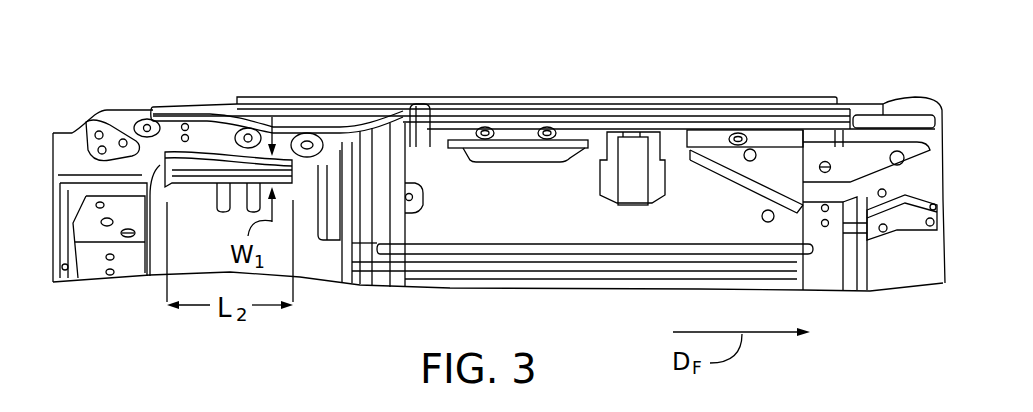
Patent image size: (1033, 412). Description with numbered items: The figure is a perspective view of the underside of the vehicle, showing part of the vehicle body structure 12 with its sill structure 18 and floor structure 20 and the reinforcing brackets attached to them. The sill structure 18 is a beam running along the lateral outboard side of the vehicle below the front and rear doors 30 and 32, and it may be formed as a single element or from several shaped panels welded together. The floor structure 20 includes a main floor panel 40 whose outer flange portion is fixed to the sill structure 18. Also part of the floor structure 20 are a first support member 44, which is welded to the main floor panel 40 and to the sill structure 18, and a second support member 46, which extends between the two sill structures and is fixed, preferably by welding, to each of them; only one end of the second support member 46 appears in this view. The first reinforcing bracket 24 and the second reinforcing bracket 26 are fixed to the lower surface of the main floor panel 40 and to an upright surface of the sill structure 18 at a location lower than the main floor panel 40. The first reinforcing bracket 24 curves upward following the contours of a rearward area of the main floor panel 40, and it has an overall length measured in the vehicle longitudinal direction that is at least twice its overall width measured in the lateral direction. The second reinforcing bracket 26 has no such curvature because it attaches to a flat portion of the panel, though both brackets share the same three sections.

The vehicle body structure 12 is at (824, 45).
The sill structure 18 is at (503, 90).
The floor structure 20 is at (714, 186).
The first reinforcing bracket 24 is at (203, 180).
The second reinforcing bracket 26 is at (523, 153).
The front door 30 is at (592, 102).
The rear door 32 is at (345, 103).
The main floor panel 40 is at (450, 213).
The first support member 44 is at (635, 178).
The second support member 46 is at (342, 210).